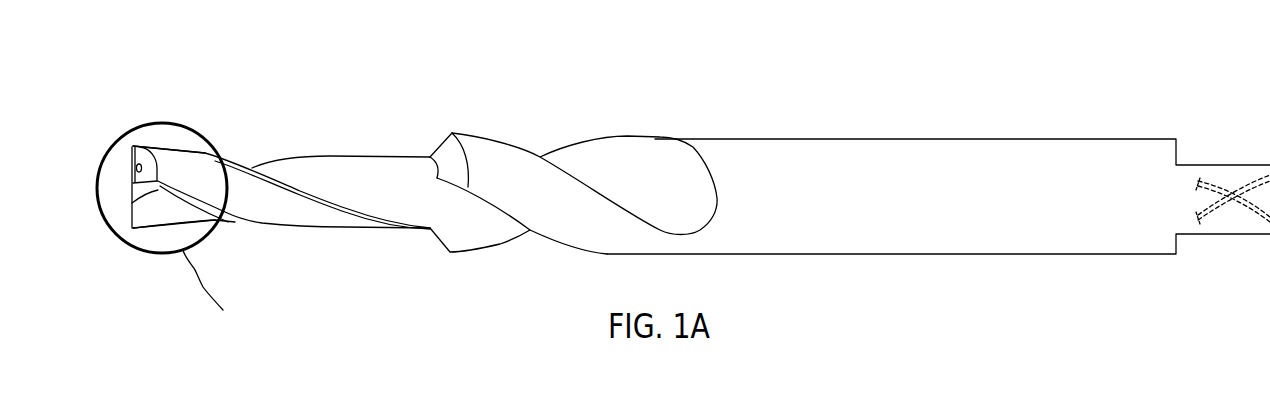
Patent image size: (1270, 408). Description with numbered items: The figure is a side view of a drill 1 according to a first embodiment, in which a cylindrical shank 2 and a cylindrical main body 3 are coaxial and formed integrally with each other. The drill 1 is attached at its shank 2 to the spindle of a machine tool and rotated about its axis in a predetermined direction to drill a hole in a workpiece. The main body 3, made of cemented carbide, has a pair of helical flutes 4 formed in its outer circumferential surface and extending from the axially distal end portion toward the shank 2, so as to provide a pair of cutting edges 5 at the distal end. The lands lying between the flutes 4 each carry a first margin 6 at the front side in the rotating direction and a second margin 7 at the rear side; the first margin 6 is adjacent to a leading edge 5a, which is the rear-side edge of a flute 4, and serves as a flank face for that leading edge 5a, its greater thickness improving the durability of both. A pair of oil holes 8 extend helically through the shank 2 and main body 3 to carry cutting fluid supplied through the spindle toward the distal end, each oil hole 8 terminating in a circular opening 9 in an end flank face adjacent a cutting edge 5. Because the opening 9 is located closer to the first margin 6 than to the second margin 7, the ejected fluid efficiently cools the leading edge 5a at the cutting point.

The drill 1 is at (1148, 122).
The shank 2 is at (960, 130).
The main body 3 is at (387, 135).
The helical flute 4 is at (327, 156).
The cutting edge 5 is at (133, 147).
The leading edge 5a is at (160, 147).
The first margin 6 is at (238, 162).
The second margin 7 is at (183, 197).
The oil hole 8 is at (1235, 216).
The opening 9 is at (136, 167).